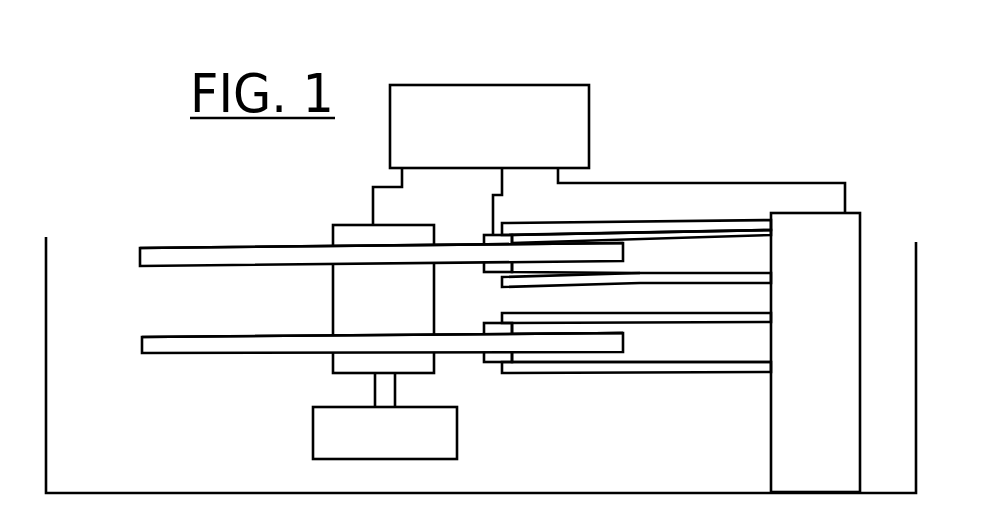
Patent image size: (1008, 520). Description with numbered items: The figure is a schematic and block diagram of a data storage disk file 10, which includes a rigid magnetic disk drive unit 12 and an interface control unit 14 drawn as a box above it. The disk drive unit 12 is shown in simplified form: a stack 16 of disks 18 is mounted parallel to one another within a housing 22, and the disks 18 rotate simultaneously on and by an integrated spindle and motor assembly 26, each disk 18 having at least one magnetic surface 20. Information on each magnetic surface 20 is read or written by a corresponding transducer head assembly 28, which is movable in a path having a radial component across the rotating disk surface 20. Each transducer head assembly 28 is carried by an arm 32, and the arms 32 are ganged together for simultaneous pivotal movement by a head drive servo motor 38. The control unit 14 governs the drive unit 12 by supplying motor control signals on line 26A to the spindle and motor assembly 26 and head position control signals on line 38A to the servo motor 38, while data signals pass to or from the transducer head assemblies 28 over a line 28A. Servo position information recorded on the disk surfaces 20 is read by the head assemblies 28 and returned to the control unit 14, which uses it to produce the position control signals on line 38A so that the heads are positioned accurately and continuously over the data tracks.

The data storage disk file 10 is at (742, 146).
The rigid magnetic disk drive unit 12 is at (532, 424).
The interface control unit 14 is at (489, 126).
The stack 16 is at (300, 223).
The disks 18 is at (140, 258).
The magnetic surface 20 is at (237, 247).
The housing 22 is at (916, 362).
The integrated spindle and motor assembly 26 is at (383, 299).
The line 26A is at (366, 196).
The transducer head assembly 28 is at (485, 235).
The lines 28A is at (483, 201).
The arm 32 is at (578, 222).
The head drive servo motor 38 is at (815, 352).
The line 38A is at (701, 187).